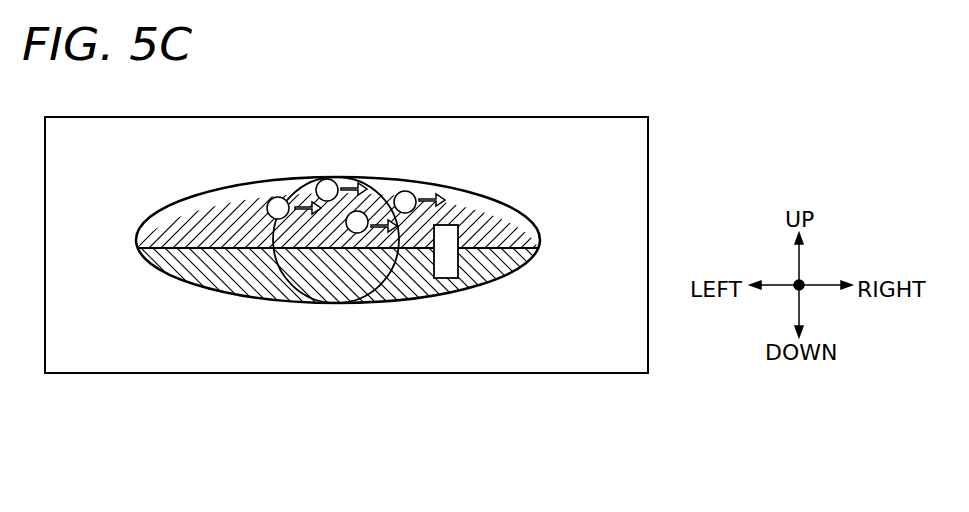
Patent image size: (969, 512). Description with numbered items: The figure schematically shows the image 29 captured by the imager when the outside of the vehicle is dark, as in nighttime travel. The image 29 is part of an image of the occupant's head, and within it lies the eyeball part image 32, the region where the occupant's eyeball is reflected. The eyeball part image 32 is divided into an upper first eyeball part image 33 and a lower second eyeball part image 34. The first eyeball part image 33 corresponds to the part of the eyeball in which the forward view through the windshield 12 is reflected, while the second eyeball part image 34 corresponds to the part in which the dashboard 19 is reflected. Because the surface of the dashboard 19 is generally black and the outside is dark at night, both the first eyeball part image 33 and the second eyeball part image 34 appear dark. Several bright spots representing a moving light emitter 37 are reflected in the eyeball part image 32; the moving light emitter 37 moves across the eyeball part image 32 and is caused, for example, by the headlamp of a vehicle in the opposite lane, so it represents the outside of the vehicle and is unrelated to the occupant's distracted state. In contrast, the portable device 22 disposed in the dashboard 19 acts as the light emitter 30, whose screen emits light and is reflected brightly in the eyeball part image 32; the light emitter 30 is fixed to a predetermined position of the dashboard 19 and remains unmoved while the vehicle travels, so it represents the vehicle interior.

The windshield 12 is at (355, 245).
The dashboard 19 is at (422, 298).
The portable device 22 is at (408, 219).
The image 29 is at (648, 137).
The light emitter 30 is at (450, 226).
The eyeball part image 32 is at (600, 204).
The first eyeball part image 33 is at (527, 215).
The second eyeball part image 34 is at (528, 263).
The moving light emitter 37 is at (272, 196).